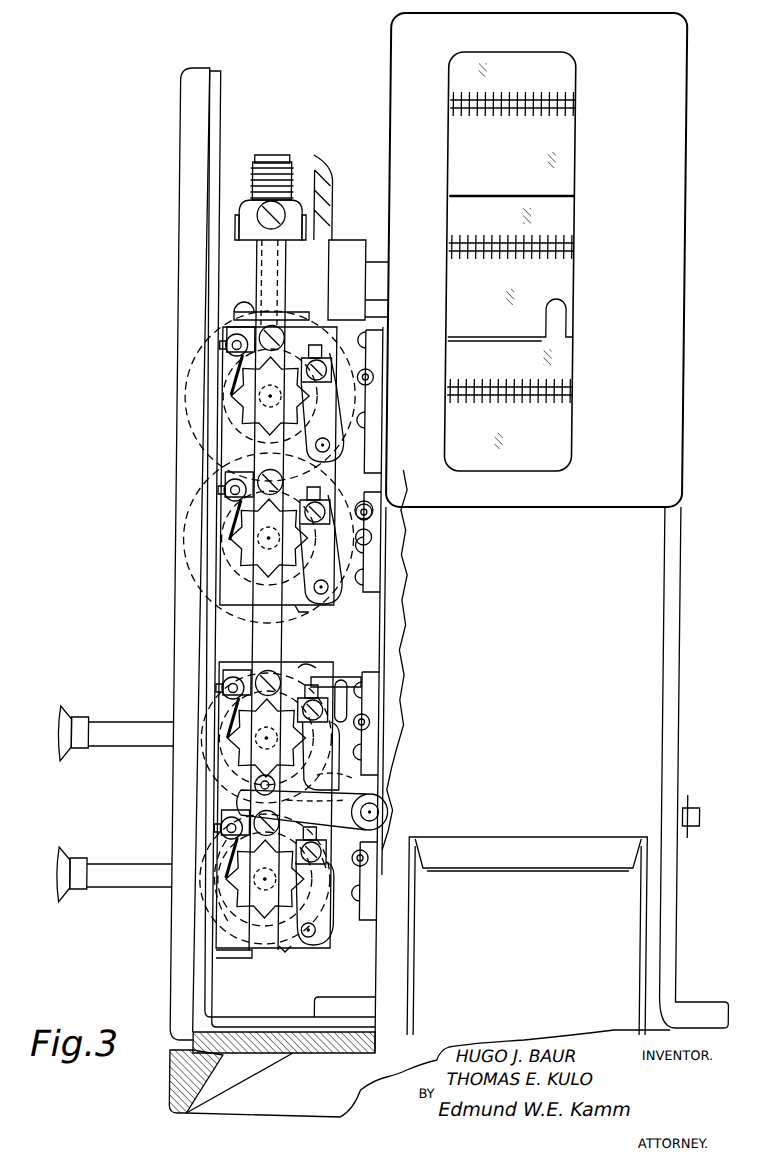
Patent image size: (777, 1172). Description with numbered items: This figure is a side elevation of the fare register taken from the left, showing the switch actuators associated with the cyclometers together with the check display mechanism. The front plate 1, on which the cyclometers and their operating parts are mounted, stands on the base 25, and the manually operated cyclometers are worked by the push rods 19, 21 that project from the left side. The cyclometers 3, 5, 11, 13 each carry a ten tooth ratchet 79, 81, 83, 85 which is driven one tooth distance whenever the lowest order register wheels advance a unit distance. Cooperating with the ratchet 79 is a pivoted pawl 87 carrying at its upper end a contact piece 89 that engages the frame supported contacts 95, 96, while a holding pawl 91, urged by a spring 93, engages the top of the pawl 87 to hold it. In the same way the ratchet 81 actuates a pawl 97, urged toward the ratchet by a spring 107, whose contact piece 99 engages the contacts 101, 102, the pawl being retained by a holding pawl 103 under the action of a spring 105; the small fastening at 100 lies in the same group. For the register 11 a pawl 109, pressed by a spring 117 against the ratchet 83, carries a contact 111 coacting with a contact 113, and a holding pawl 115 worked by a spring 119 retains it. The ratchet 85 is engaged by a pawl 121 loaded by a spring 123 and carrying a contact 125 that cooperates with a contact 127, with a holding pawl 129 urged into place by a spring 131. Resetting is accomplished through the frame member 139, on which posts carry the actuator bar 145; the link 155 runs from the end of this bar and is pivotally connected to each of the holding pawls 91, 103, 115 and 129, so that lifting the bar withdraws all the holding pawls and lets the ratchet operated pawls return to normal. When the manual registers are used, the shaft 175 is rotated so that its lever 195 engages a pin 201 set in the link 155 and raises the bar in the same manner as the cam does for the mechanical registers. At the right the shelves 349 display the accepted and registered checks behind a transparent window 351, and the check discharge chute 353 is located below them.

The front plate 1 is at (199, 628).
The cyclometer 3 is at (270, 396).
The cyclometer 5 is at (269, 538).
The cyclometer 11 is at (236, 766).
The cyclometer 13 is at (264, 879).
The push rod 19 is at (123, 707).
The push rod 21 is at (123, 848).
The base 25 is at (178, 1063).
The ten tooth ratchet 79 is at (310, 475).
The ten tooth ratchet 81 is at (307, 646).
The ten tooth ratchet 83 is at (238, 744).
The ten tooth ratchet 85 is at (236, 906).
The pivoted pawl 87 is at (345, 447).
The contact piece 89 is at (333, 372).
The holding pawl 91 is at (257, 320).
The spring 93 is at (240, 348).
The contact 95 is at (372, 372).
The contact 96 is at (372, 386).
The pawl 97 is at (338, 596).
The contact piece 99 is at (331, 679).
The screw 100 is at (365, 524).
The contact 101 is at (362, 513).
The contact 102 is at (372, 532).
The holding pawl 103 is at (240, 492).
The spring 105 is at (230, 520).
The spring 107 is at (300, 606).
The pawl 109 is at (301, 810).
The contact 111 is at (334, 676).
The contact 113 is at (350, 715).
The holding pawl 115 is at (328, 652).
The spring 117 is at (366, 745).
The spring 119 is at (230, 706).
The pawl 121 is at (330, 934).
The spring 123 is at (288, 948).
The contact 125 is at (330, 862).
The contact 127 is at (372, 852).
The holding pawl 129 is at (232, 817).
The spring 131 is at (225, 853).
The frame member 139 is at (220, 312).
The actuator bar 145 is at (244, 210).
The link 155 is at (262, 636).
The shaft 175 is at (392, 810).
The lever 195 is at (355, 778).
The pin 201 is at (257, 788).
The shelves 349 is at (540, 330).
The window 351 is at (556, 414).
The check discharge chute 353 is at (536, 838).